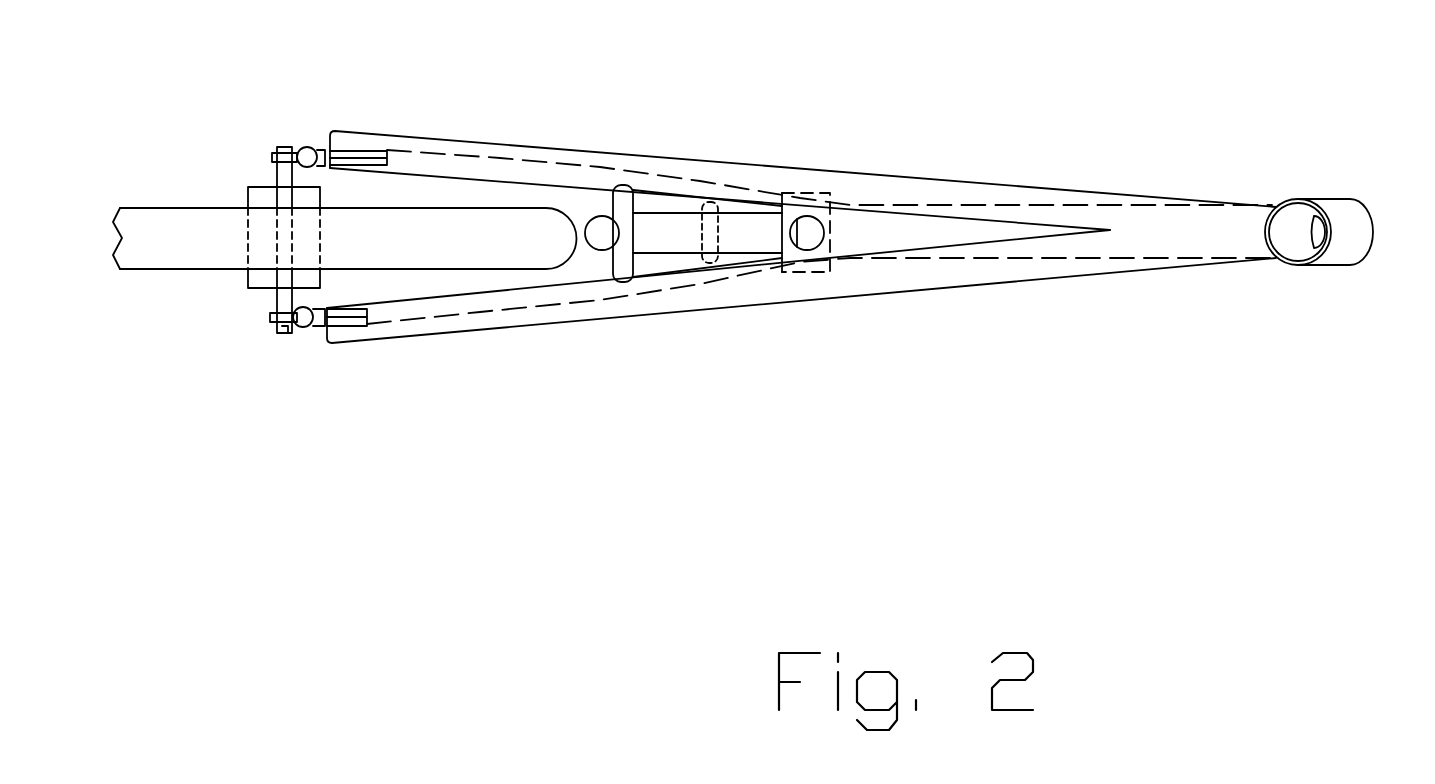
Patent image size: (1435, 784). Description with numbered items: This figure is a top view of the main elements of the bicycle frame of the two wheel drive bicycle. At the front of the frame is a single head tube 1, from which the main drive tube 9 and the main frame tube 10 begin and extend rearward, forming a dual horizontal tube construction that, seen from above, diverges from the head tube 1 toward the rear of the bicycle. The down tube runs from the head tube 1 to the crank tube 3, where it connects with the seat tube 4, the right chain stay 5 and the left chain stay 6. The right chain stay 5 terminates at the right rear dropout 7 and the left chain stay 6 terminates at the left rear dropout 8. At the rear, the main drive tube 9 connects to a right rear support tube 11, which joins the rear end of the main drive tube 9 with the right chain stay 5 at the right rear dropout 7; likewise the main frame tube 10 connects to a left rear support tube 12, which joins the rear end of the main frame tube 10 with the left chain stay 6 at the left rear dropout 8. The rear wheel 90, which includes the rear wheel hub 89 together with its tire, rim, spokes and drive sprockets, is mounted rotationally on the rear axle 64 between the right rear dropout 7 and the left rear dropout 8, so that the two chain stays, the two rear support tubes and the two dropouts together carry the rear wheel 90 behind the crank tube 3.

The head tube 1 is at (1347, 224).
The crank tube 3 is at (818, 273).
The seat tube 4 is at (757, 218).
The right chain stay 5 is at (730, 260).
The left chain stay 6 is at (495, 150).
The right rear dropout 7 is at (275, 325).
The left rear dropout 8 is at (277, 148).
The main drive tube 9 is at (918, 277).
The main frame tube 10 is at (918, 193).
The right rear support tube 11 is at (302, 330).
The left rear support tube 12 is at (307, 147).
The rear axle 64 is at (282, 335).
The rear wheel hub 89 is at (260, 289).
The rear wheel 90 is at (367, 245).